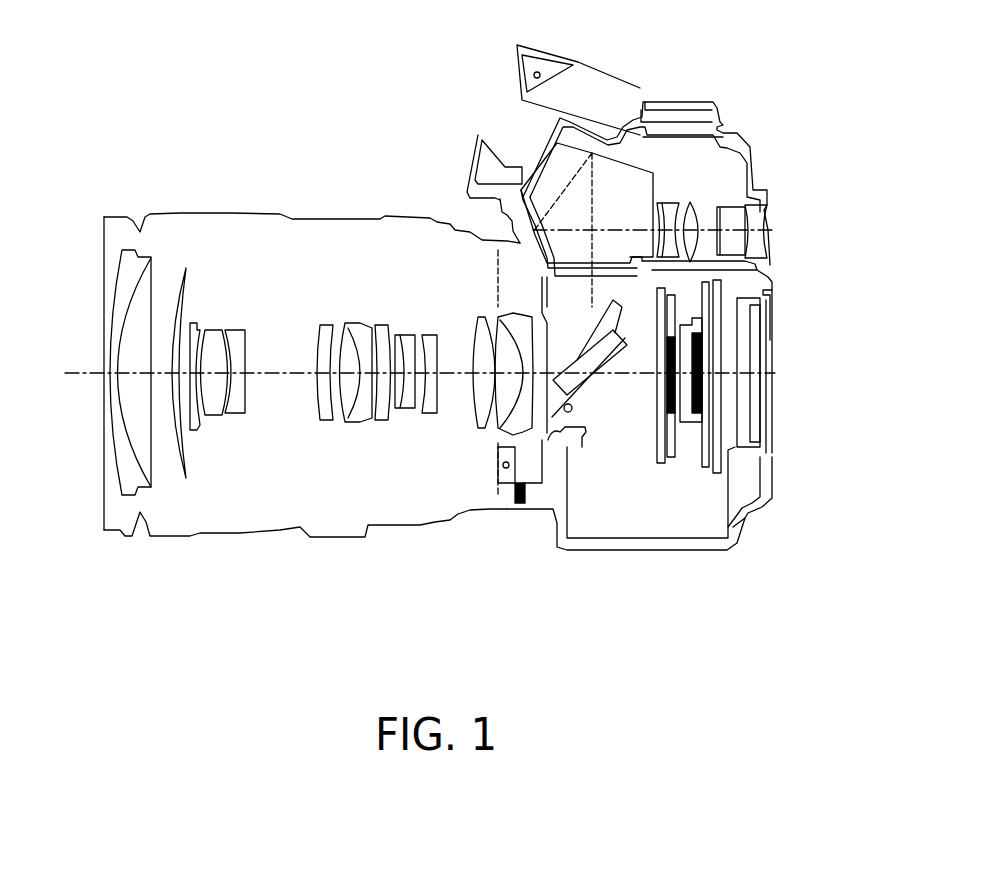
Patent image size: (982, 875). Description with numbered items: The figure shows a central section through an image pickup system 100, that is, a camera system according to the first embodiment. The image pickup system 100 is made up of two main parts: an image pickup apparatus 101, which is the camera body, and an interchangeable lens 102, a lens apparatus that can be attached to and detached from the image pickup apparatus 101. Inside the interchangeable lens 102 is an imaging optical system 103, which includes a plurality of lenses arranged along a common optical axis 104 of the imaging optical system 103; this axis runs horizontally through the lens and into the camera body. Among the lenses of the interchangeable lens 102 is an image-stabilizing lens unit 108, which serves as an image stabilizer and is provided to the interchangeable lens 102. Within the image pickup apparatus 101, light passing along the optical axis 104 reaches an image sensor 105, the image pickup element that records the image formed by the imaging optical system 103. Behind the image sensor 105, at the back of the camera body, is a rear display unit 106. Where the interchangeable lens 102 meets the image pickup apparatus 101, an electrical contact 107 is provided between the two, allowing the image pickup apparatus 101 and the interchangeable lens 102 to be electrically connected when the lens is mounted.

The image pickup system 100 is at (841, 101).
The image pickup apparatus 101 is at (733, 138).
The interchangeable lens 102 is at (132, 218).
The imaging optical system 103 is at (226, 497).
The optical axis 104 is at (72, 373).
The image sensor 105 is at (708, 482).
The rear display unit 106 is at (772, 400).
The electrical contact 107 is at (518, 508).
The image-stabilizing lens unit 108 is at (405, 410).